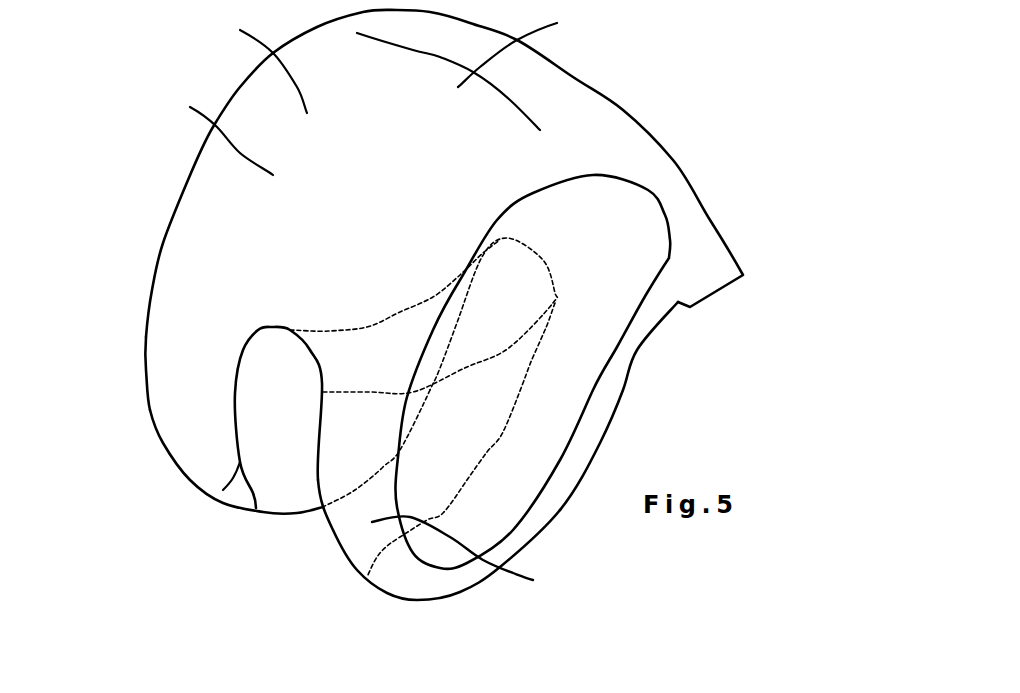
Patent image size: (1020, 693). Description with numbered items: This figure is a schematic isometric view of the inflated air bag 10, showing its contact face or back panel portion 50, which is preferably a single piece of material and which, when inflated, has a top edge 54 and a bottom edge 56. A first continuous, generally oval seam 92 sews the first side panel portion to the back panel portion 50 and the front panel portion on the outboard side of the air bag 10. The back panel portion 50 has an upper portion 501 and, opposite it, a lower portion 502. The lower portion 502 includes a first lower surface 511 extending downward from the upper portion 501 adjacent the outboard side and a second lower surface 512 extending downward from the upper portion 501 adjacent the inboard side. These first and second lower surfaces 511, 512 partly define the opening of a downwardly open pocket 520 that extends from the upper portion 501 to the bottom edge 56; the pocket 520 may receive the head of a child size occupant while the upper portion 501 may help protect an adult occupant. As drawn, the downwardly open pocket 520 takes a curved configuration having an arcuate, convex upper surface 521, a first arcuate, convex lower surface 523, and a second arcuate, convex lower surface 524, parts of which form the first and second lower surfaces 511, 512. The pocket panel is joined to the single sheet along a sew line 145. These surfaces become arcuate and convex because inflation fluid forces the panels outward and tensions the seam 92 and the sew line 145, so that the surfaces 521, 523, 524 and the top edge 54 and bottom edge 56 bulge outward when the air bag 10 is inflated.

The air bag 10 is at (735, 173).
The back panel portion 50 is at (240, 30).
The top edge 54 is at (557, 23).
The upper portion 501 is at (190, 107).
The first seam 92 is at (650, 190).
The first arcuate, convex lower surface 523 is at (163, 243).
The arcuate, convex upper surface 521 is at (377, 395).
The first lower surface 511 is at (185, 342).
The lower portion 502 is at (188, 391).
The sew line 145 is at (525, 383).
The second arcuate, convex lower surface 524 is at (600, 445).
The bottom edge 56 is at (243, 487).
The downwardly open pocket 520 is at (276, 542).
The second lower surface 512 is at (363, 547).